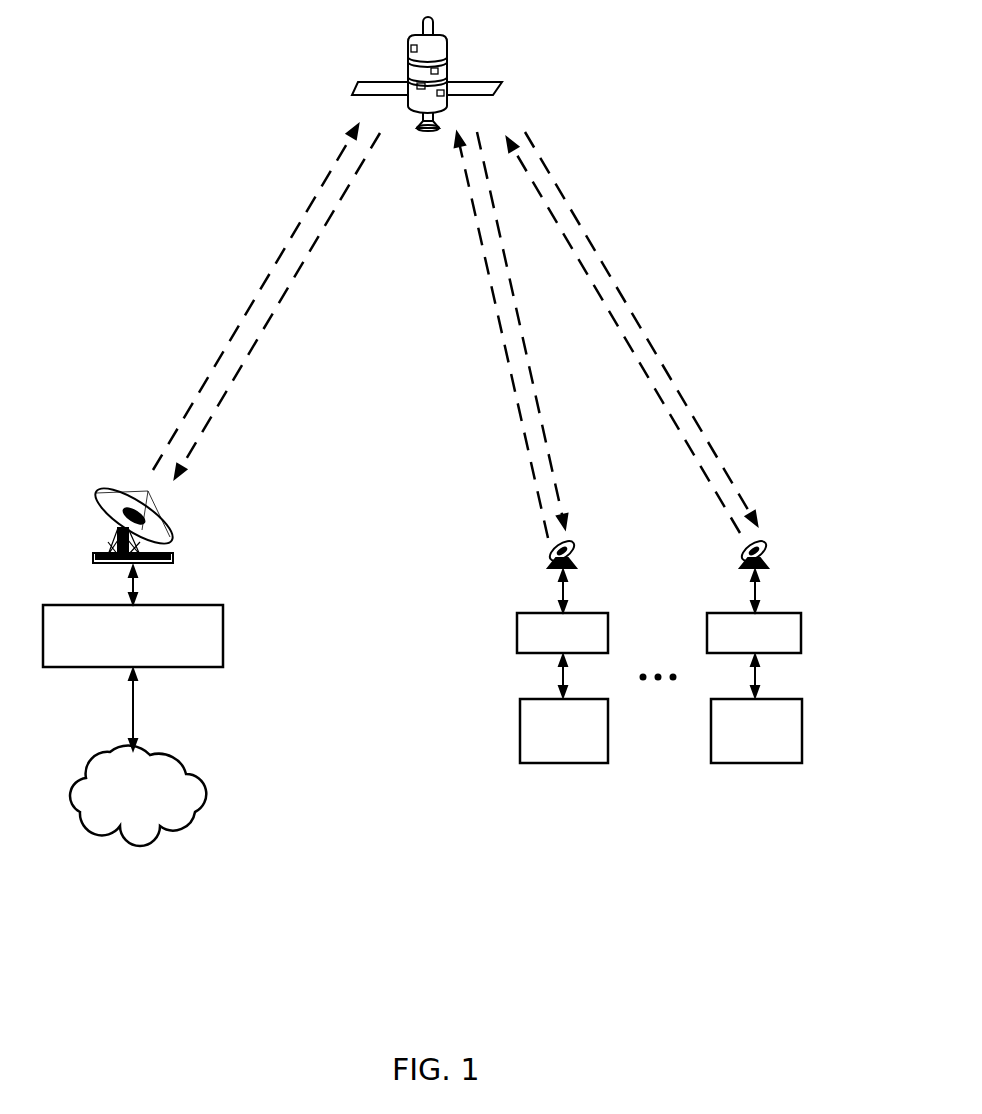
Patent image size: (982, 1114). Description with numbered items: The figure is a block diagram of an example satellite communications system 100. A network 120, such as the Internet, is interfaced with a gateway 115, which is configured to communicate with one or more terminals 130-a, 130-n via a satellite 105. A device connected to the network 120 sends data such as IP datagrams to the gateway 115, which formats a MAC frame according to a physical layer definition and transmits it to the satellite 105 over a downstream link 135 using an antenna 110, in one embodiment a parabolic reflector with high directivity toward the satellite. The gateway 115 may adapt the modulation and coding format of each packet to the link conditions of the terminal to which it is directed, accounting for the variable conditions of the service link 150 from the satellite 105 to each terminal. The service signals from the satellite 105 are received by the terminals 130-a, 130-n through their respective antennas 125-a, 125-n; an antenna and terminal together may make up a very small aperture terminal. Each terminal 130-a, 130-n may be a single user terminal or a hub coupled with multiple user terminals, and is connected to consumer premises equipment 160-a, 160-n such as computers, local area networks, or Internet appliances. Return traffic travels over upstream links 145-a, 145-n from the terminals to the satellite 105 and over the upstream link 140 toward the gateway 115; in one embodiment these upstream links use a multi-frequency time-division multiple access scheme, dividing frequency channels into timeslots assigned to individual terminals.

The satellite communications system 100 is at (691, 970).
The satellite 105 is at (410, 47).
The antenna 110 is at (173, 538).
The gateway 115 is at (223, 640).
The network 120 is at (207, 797).
The antenna 125-a is at (551, 552).
The antenna 125-n is at (744, 552).
The terminal 130-a is at (517, 630).
The terminal 130-n is at (707, 630).
The downstream link 135 is at (255, 300).
The upstream link 140 is at (318, 237).
The upstream link 145-a is at (504, 340).
The upstream link 145-n is at (626, 340).
The service link 150 is at (543, 425).
The consumer premises equipment 160-a is at (548, 764).
The consumer premises equipment 160-n is at (741, 764).